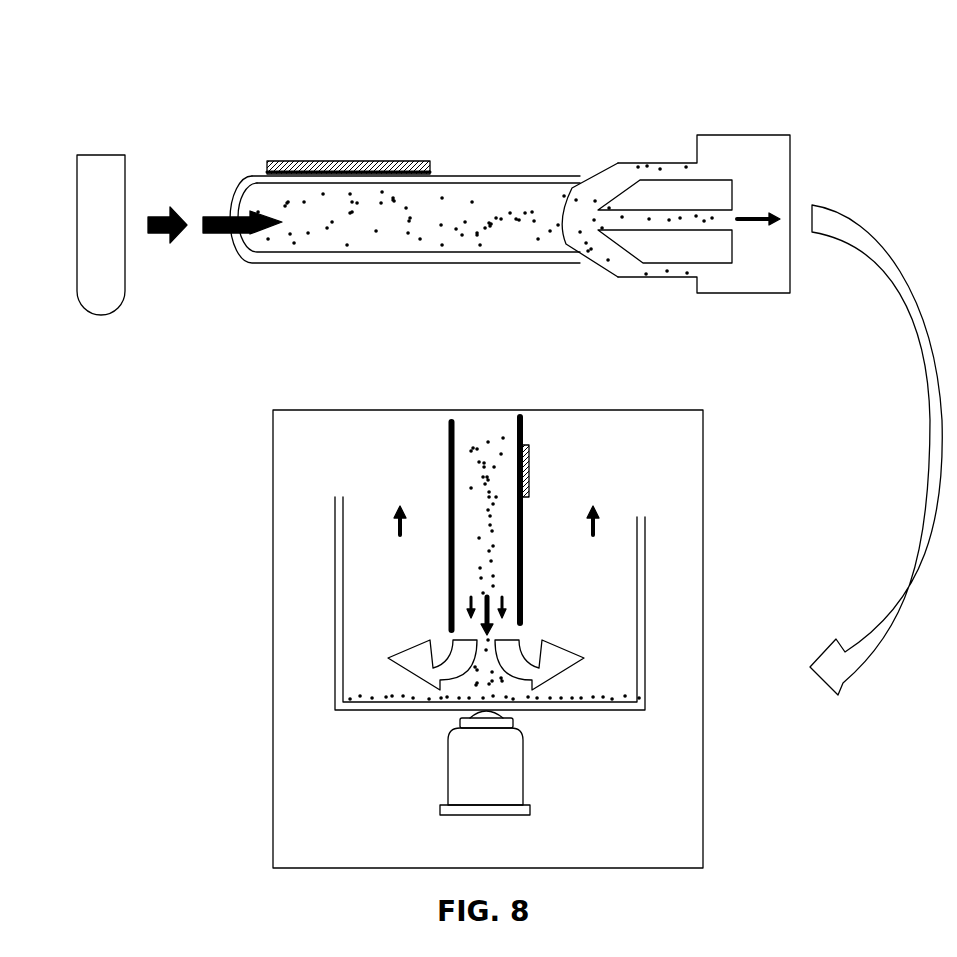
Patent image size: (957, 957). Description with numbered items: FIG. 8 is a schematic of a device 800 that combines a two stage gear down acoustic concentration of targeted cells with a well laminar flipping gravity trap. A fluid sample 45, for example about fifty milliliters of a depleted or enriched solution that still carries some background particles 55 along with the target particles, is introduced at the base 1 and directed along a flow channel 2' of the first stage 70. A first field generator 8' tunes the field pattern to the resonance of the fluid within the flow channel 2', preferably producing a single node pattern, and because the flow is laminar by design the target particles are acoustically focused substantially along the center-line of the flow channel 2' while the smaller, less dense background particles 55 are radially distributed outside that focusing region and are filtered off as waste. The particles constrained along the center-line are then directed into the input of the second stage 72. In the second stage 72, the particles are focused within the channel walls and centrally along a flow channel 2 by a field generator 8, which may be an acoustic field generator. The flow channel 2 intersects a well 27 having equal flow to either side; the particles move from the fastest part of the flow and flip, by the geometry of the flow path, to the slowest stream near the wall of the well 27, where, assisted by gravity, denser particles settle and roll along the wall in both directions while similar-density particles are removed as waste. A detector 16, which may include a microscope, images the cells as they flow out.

The device 800 is at (206, 86).
The first stage 70 is at (778, 113).
The first field generator 8' is at (348, 140).
The fluid sample 45 is at (113, 237).
The base 1 is at (242, 263).
The background particles 55 is at (313, 238).
The flow channel 2' is at (663, 218).
The flow channel 2 is at (461, 523).
The field generator 8 is at (545, 471).
The well 27 is at (645, 537).
The second stage 72 is at (188, 413).
The detector 16 is at (497, 782).